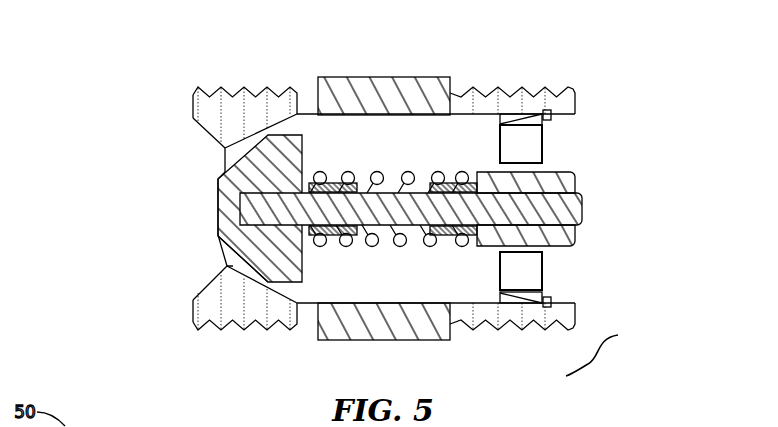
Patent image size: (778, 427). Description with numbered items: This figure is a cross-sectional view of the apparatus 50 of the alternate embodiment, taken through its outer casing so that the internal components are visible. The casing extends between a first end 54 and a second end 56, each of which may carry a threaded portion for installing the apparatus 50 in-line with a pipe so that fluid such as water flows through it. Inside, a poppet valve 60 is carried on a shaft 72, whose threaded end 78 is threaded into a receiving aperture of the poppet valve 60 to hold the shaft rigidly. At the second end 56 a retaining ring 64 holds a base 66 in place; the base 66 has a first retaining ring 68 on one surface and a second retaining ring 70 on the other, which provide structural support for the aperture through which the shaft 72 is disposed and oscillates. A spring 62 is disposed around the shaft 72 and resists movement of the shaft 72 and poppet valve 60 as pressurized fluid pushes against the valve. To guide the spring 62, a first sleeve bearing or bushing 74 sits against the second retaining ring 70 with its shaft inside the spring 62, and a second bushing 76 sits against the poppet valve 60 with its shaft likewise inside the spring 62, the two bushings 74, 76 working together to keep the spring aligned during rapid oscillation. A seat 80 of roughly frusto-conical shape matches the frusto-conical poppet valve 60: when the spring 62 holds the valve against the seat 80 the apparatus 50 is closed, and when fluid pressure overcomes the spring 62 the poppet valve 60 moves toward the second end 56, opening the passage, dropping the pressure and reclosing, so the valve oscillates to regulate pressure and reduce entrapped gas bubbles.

The apparatus 50 is at (145, 107).
The first end 54 is at (213, 330).
The second end 56 is at (583, 354).
The poppet valve 60 is at (235, 233).
The spring 62 is at (372, 224).
The retaining ring 64 is at (547, 110).
The base 66 is at (509, 118).
The first retaining ring 68 is at (569, 172).
The second retaining ring 70 is at (487, 243).
The shaft 72 is at (393, 113).
The first sleeve bearing or bushing 74 is at (437, 172).
The second bushing 76 is at (333, 170).
The threaded end 78 is at (245, 155).
The seat 80 is at (266, 284).